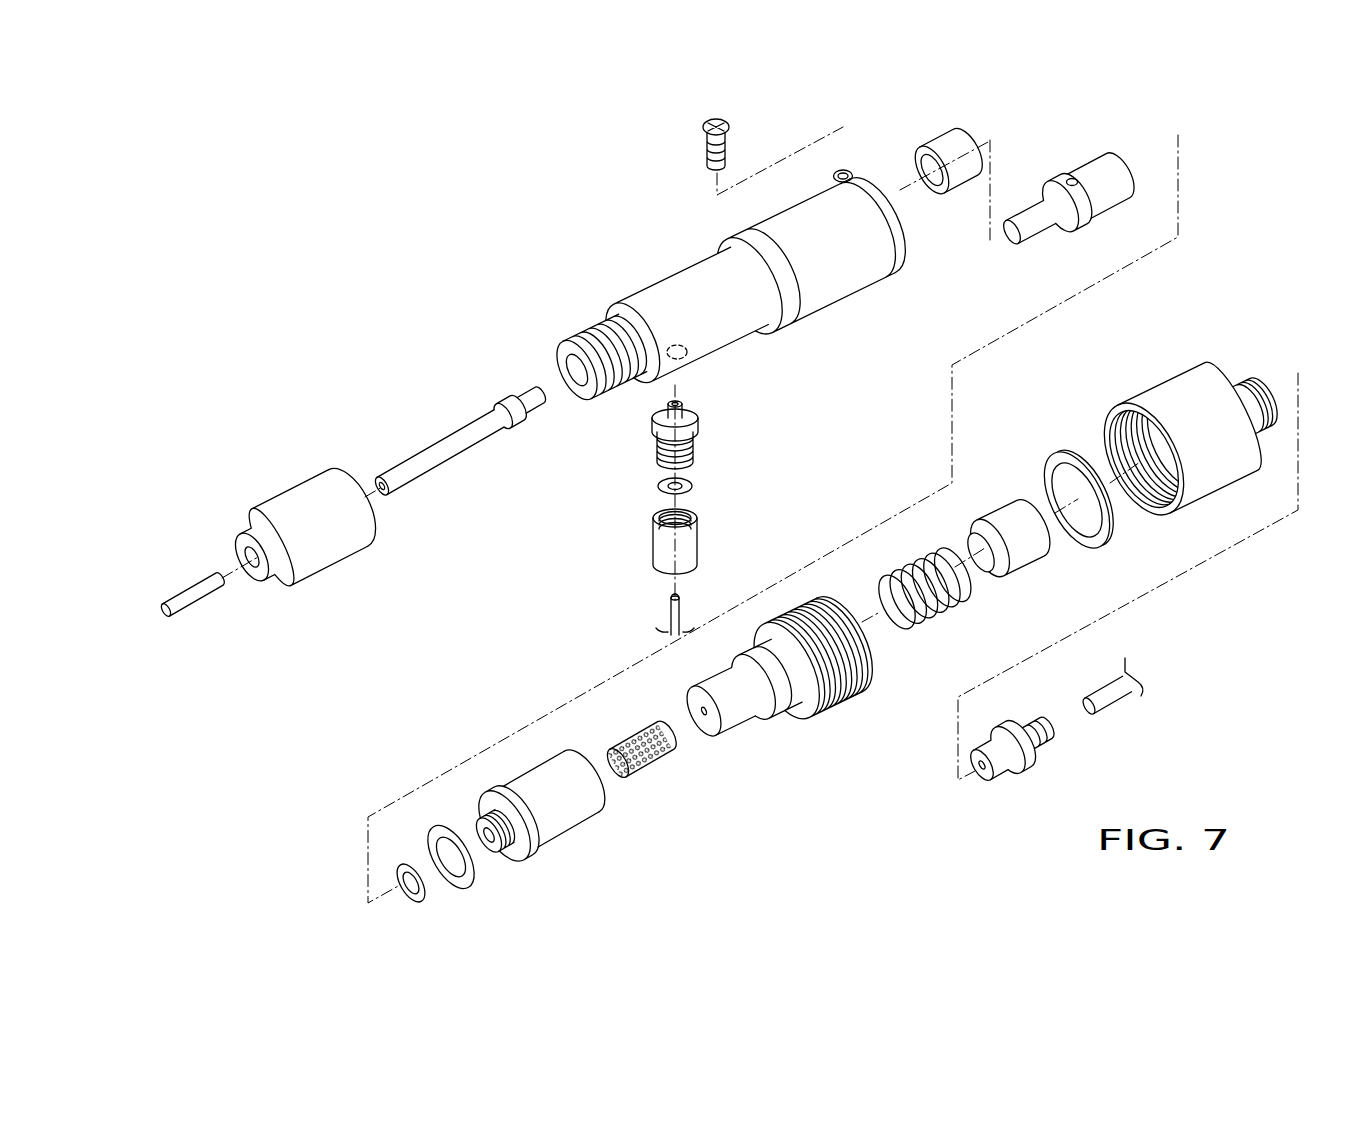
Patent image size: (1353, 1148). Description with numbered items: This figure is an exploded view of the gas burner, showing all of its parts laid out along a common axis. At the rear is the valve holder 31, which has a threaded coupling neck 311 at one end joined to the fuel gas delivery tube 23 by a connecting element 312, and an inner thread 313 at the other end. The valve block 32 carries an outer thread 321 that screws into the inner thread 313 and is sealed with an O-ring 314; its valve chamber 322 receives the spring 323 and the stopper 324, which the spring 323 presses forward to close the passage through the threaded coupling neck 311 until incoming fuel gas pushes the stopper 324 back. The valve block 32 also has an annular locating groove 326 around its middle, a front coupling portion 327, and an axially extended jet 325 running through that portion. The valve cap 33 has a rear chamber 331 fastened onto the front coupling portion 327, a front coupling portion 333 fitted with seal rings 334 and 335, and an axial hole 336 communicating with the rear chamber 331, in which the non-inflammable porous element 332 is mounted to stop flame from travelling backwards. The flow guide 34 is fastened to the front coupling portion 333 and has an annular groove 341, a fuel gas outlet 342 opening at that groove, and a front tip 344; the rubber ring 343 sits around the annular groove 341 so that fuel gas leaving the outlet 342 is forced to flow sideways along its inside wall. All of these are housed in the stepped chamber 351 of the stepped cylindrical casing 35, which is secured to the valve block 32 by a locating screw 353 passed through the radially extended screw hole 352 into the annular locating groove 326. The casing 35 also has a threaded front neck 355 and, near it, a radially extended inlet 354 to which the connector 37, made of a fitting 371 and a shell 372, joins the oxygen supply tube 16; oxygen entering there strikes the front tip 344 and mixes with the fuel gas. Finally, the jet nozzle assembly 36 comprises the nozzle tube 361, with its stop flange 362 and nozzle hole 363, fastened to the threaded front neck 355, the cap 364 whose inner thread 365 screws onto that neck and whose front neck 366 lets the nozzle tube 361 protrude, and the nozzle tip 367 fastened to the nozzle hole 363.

The oxygen supply tube 16 is at (670, 604).
The fuel gas delivery tube 23 is at (1117, 692).
The valve holder 31 is at (1183, 395).
The threaded coupling neck 311 is at (1257, 373).
The connecting element 312 is at (990, 782).
The inner thread 313 is at (1127, 437).
The O-ring 314 is at (1060, 467).
The valve block 32 is at (828, 707).
The outer thread 321 is at (797, 610).
The valve chamber 322 is at (862, 650).
The spring 323 is at (915, 565).
The stopper 324 is at (1020, 560).
The axially extended jet 325 is at (703, 718).
The annular locating groove 326 is at (783, 722).
The front coupling portion 327 is at (718, 690).
The valve cap 33 is at (562, 820).
The rear chamber 331 is at (606, 789).
The porous element 332 is at (630, 737).
The front coupling portion 333 is at (505, 810).
The seal ring 334 is at (440, 832).
The seal ring 335 is at (403, 863).
The axial hole 336 is at (477, 820).
The flow guide 34 is at (1118, 182).
The annular groove 341 is at (1092, 205).
The fuel gas outlet 342 is at (1071, 178).
The rubber ring 343 is at (956, 175).
The front tip 344 is at (1028, 228).
The stepped cylindrical casing 35 is at (807, 288).
The stepped chamber 351 is at (910, 228).
The radially extended screw hole 352 is at (843, 170).
The locating screw 353 is at (703, 150).
The radially extended inlet 354 is at (687, 356).
The threaded front neck 355 is at (583, 343).
The jet nozzle assembly 36 is at (352, 426).
The nozzle tube 361 is at (456, 480).
The stop flange 362 is at (511, 428).
The nozzle hole 363 is at (377, 480).
The cap 364 is at (343, 563).
The inner thread 365 is at (378, 520).
The front neck 366 is at (253, 568).
The nozzle tip 367 is at (182, 607).
The connector 37 is at (726, 486).
The fitting 371 is at (662, 430).
The shell 372 is at (660, 544).